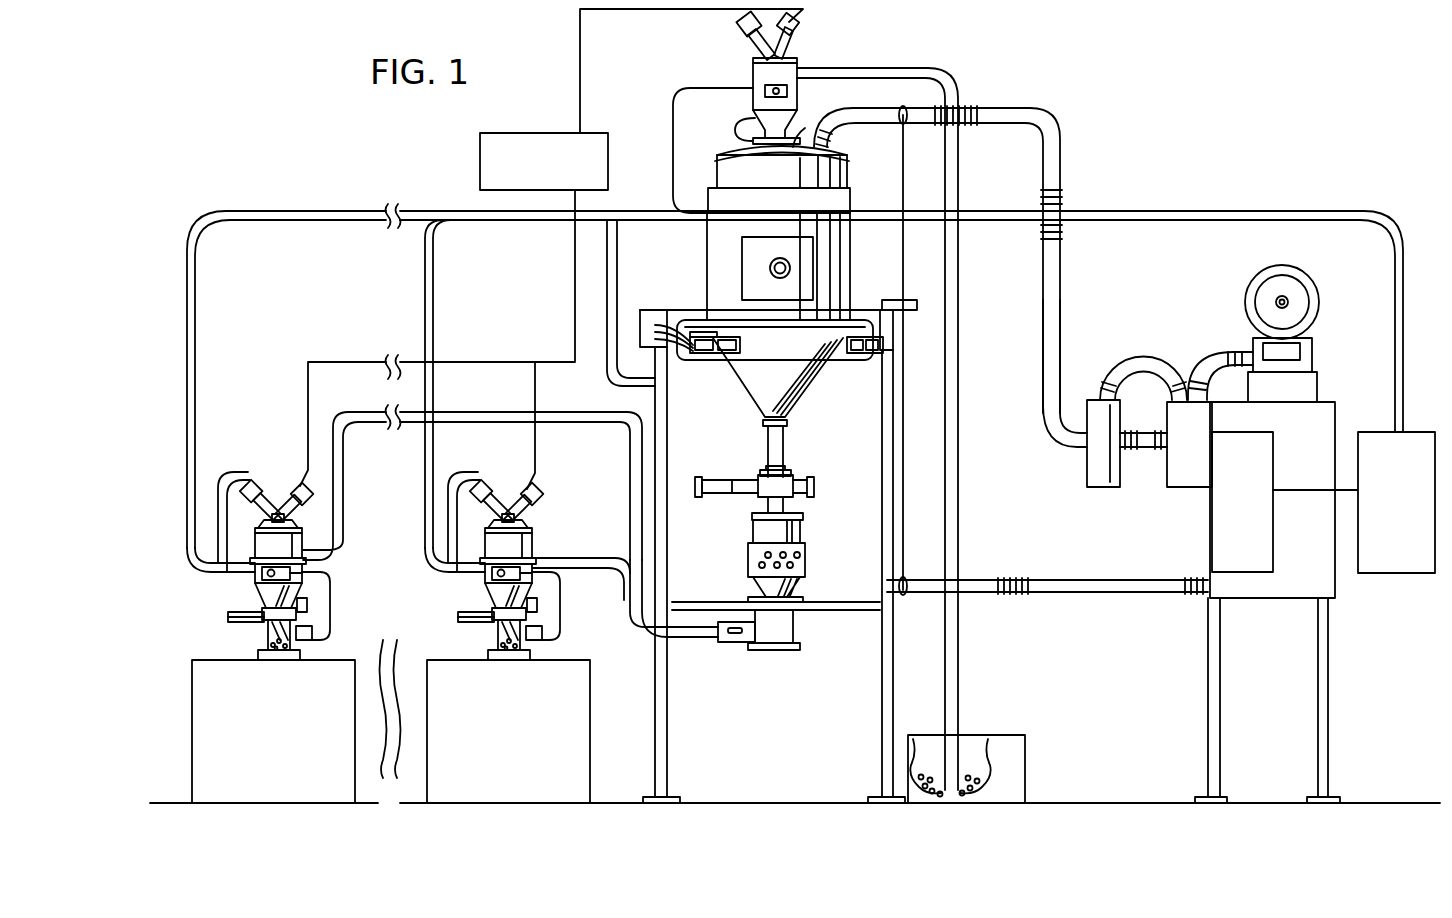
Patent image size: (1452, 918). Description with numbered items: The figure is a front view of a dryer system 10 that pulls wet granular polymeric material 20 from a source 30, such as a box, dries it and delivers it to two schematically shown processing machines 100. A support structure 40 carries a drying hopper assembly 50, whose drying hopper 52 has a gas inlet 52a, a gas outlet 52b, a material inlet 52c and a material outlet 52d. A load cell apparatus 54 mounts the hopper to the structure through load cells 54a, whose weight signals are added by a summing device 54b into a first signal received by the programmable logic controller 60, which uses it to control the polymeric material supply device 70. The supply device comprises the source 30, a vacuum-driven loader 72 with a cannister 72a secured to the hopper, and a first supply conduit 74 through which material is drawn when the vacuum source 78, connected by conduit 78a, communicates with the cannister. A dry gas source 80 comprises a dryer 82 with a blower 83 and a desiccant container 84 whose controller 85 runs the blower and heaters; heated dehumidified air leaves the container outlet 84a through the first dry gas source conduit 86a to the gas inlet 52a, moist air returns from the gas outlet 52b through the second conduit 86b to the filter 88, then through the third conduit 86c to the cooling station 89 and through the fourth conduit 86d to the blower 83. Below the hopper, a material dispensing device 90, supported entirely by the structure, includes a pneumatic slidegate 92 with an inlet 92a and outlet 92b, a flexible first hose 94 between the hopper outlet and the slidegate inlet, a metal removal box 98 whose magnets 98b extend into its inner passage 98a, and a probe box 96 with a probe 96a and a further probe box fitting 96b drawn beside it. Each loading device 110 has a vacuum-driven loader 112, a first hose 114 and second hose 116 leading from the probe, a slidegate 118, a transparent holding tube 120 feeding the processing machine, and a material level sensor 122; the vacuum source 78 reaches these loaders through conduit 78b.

The dryer system 10 is at (1027, 72).
The granular polymeric material 20 is at (959, 765).
The source 30 is at (1022, 760).
The support structure 40 is at (926, 318).
The drying hopper assembly 50 is at (865, 178).
The drying hopper 52 is at (832, 245).
The gas inlet 52a is at (818, 400).
The gas outlet 52b is at (836, 121).
The inlet 52c is at (787, 140).
The outlet 52d is at (770, 422).
The load cell apparatus 54 is at (645, 290).
The load cells 54a is at (710, 335).
The summing device 54b is at (655, 327).
The programmable logic controller 60 is at (1410, 437).
The polymeric material supply device 70 is at (808, 14).
The vacuum-driven loader 72 is at (806, 44).
The cannister 72a is at (757, 80).
The first supply conduit 74 is at (960, 505).
The vacuum source 78 is at (592, 132).
The conduit 78a is at (662, 10).
The conduit 78b is at (535, 380).
The dry gas source 80 is at (1322, 275).
The dryer 82 is at (1337, 385).
The blower 83 is at (1320, 302).
The container 84 is at (1280, 600).
The outlet 84a is at (1205, 594).
The controller 85 is at (1225, 540).
The first dry gas source conduit 86a is at (1075, 592).
The second conduit 86b is at (1063, 170).
The third conduit 86c is at (1135, 358).
The fourth conduit 86d is at (1210, 355).
The filter 88 is at (1093, 462).
The cooling station 89 is at (1190, 478).
The material dispensing device 90 is at (812, 580).
The pneumatic slidegate 92 is at (722, 500).
The inlet 92a is at (767, 477).
The outlet 92b is at (767, 497).
The first hose 94 is at (784, 452).
The probe box 96 is at (774, 657).
The probe 96a is at (722, 640).
The actuator port 96b is at (737, 641).
The metal removal box 98 is at (810, 530).
The inner passage 98a is at (802, 553).
The magnets 98b is at (775, 567).
The processing machines 100 is at (339, 653).
The loading device 110 is at (312, 497).
The vacuum-driven loader 112 is at (314, 540).
The first hose 114 is at (585, 412).
The second hose 116 is at (632, 603).
The slidegate 118 is at (230, 614).
The holding tube 120 is at (268, 634).
The material level sensor 122 is at (302, 630).